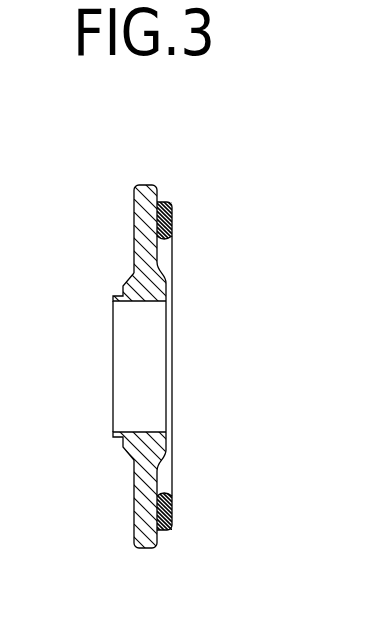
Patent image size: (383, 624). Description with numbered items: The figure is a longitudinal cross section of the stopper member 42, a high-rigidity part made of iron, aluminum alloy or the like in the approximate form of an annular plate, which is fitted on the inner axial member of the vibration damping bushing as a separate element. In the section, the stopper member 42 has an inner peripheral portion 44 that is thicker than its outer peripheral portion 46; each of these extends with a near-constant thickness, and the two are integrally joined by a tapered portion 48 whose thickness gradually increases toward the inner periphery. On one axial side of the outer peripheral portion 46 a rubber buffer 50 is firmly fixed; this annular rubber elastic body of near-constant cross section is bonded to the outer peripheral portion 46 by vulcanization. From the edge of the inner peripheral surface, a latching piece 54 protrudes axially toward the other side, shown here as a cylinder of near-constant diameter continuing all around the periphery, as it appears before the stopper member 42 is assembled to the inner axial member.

The stopper member 42 is at (137, 363).
The inner peripheral portion 44 is at (137, 299).
The outer peripheral portion 46 is at (142, 216).
The tapered portion 48 is at (132, 281).
The rubber buffer 50 is at (168, 518).
The latching piece 54 is at (118, 437).